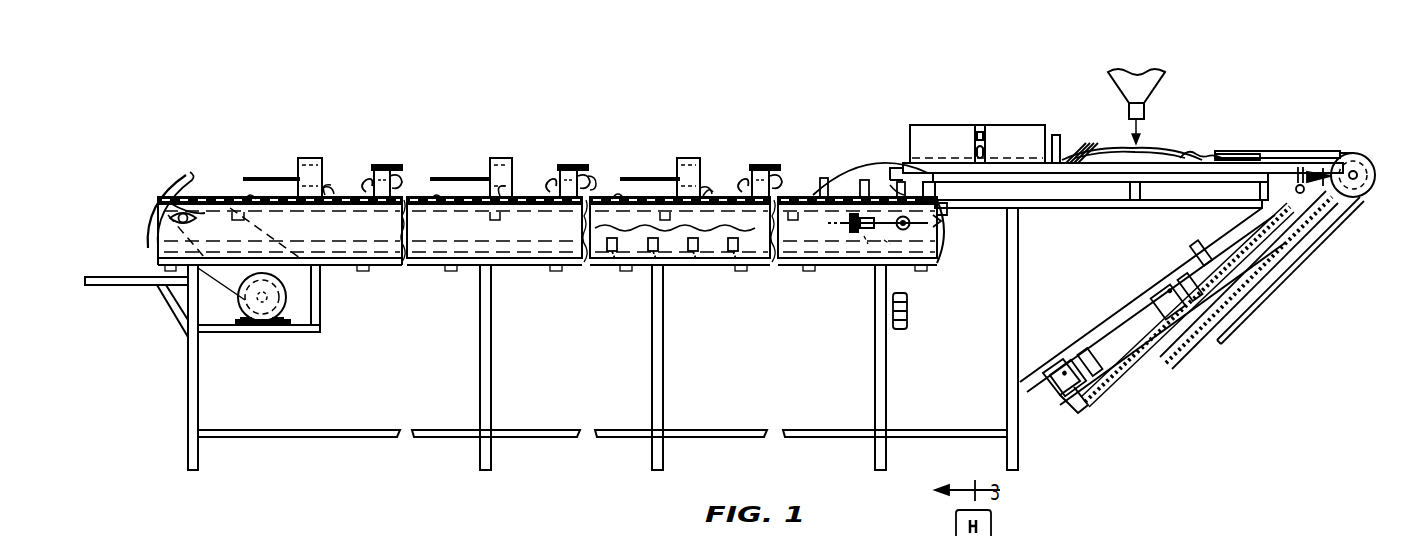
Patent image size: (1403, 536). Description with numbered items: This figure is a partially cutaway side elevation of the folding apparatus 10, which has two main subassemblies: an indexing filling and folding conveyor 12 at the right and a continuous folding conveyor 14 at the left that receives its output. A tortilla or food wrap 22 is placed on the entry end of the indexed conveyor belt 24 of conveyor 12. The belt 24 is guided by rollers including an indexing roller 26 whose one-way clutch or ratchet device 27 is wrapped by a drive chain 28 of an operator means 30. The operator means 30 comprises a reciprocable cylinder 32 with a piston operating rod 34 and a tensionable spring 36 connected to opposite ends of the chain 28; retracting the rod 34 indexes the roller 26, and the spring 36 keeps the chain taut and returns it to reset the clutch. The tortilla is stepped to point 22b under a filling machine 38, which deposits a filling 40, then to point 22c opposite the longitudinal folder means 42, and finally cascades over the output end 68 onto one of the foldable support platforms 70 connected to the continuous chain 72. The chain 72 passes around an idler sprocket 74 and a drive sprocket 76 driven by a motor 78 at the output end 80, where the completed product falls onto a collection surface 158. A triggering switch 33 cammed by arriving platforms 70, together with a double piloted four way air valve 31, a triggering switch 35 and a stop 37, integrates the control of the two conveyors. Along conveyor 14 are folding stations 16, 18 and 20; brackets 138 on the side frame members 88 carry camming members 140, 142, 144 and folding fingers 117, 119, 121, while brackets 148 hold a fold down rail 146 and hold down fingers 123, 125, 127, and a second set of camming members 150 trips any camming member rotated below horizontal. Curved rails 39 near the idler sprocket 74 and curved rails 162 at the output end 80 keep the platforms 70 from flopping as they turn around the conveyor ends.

The folding apparatus 10 is at (1310, 129).
The indexing filling and folding conveyor 12 is at (1354, 142).
The continuous folding conveyor 14 is at (208, 165).
The first folding station 16 is at (772, 126).
The second folding station 18 is at (585, 126).
The third folding station 20 is at (398, 126).
The tortilla or food wrap 22 is at (1256, 150).
The filling point 22b is at (1184, 148).
The folded tortilla 22c is at (900, 168).
The indexed conveyor belt 24 is at (1368, 162).
The indexing roller 26 is at (1370, 186).
The one-way clutch or ratchet device 27 is at (1354, 206).
The drive chain 28 is at (1320, 236).
The operator means 30 is at (1058, 392).
The double piloted four way air valve 31 is at (907, 315).
The reciprocable cylinder 32 is at (1122, 328).
The triggering switch 33 is at (844, 226).
The piston operating rod 34 is at (1268, 224).
The triggering switch 35 is at (1192, 248).
The tensionable spring 36 is at (1140, 362).
The stop 37 is at (1298, 260).
The filling machine 38 is at (1159, 78).
The curved rails 39 is at (946, 231).
The filling 40 is at (1134, 131).
The longitudinal folder means 42 is at (956, 120).
The output end of indexing conveyor 68 is at (910, 172).
The foldable support platforms 70 is at (852, 181).
The continuous chain 72 is at (788, 218).
The idler sprocket 74 is at (942, 253).
The drive sprocket 76 is at (215, 186).
The motor 78 is at (286, 316).
The output end of continuous conveyor 80 is at (146, 226).
The side frame members 88 is at (326, 231).
The folding fingers 117 is at (778, 167).
The folding fingers 119 is at (600, 171).
The folding fingers 121 is at (398, 168).
The hold down fingers 123 is at (658, 176).
The hold down fingers 125 is at (462, 176).
The hold down fingers 127 is at (251, 178).
The brackets 138 is at (400, 176).
The camming members 140 is at (752, 180).
The camming members 142 is at (569, 168).
The camming members 144 is at (368, 174).
The fold down rail 146 is at (325, 164).
The brackets 148 is at (344, 196).
The second set of camming members 150 is at (259, 196).
The collection surface 158 is at (126, 278).
The curved rails 162 is at (166, 182).